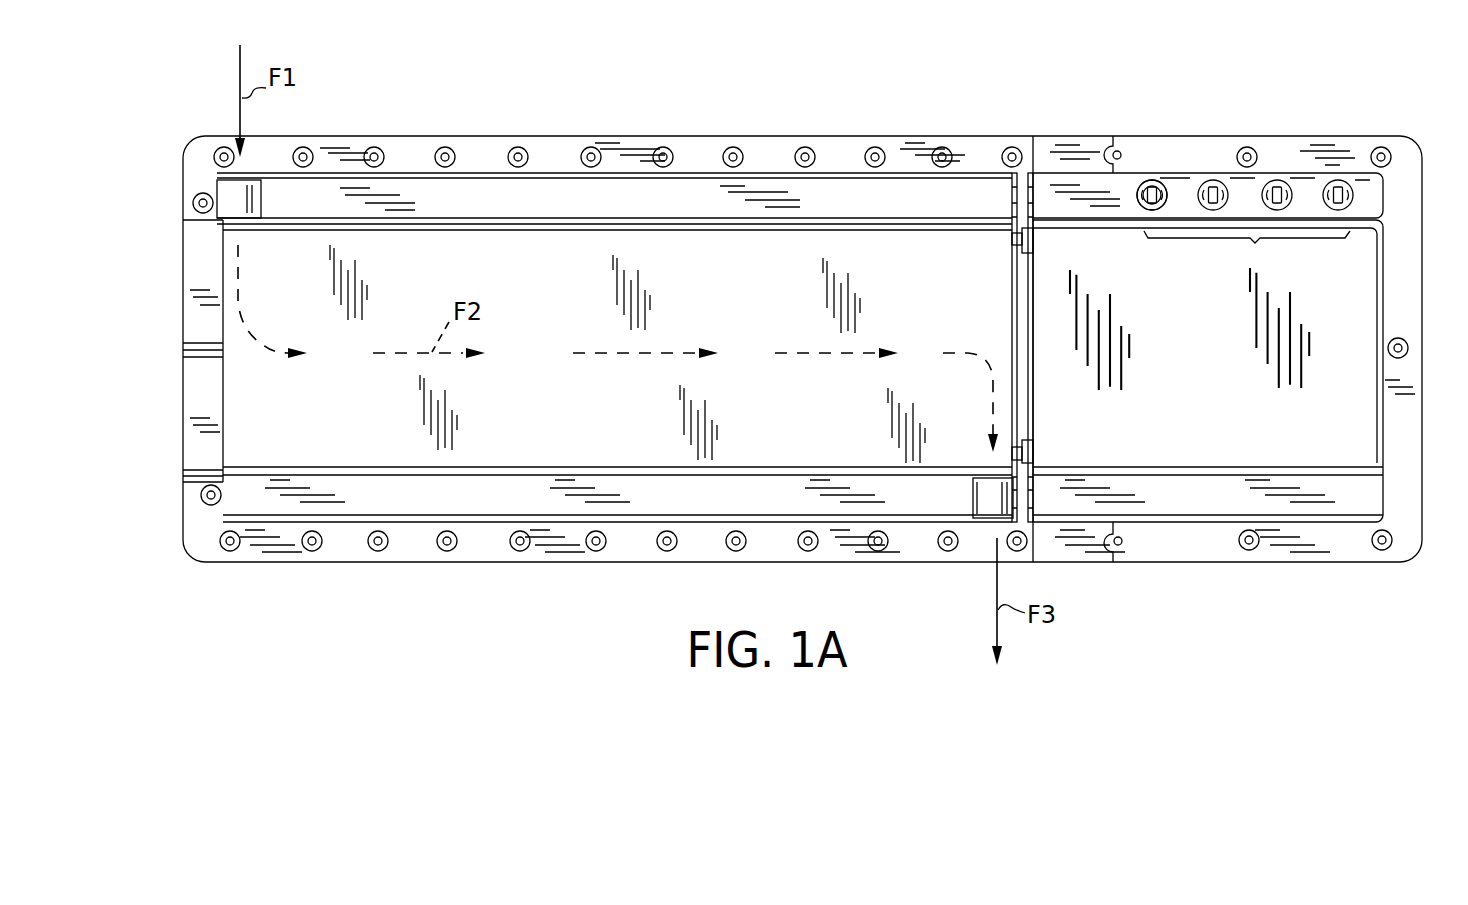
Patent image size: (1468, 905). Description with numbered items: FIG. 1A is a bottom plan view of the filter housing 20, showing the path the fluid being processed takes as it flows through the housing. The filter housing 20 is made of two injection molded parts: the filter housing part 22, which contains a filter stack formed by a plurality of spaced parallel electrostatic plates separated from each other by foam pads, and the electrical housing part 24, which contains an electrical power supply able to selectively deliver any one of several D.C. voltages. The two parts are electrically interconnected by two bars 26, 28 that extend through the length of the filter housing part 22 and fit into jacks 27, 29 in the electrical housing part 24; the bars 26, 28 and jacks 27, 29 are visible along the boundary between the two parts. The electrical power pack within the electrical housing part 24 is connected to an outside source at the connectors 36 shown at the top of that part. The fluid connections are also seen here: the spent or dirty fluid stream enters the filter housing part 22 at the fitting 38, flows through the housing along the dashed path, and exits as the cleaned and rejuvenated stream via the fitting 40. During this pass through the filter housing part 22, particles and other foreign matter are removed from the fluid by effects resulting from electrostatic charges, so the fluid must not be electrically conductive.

The filter housing 20 is at (170, 336).
The filter housing part 22 is at (452, 136).
The electrical housing part 24 is at (1423, 375).
The bar 26 is at (1012, 240).
The jack 27 is at (1033, 240).
The bar 28 is at (1012, 453).
The jack 29 is at (1034, 450).
The connectors 36 is at (1245, 228).
The fitting 38 is at (231, 191).
The fitting 40 is at (990, 503).